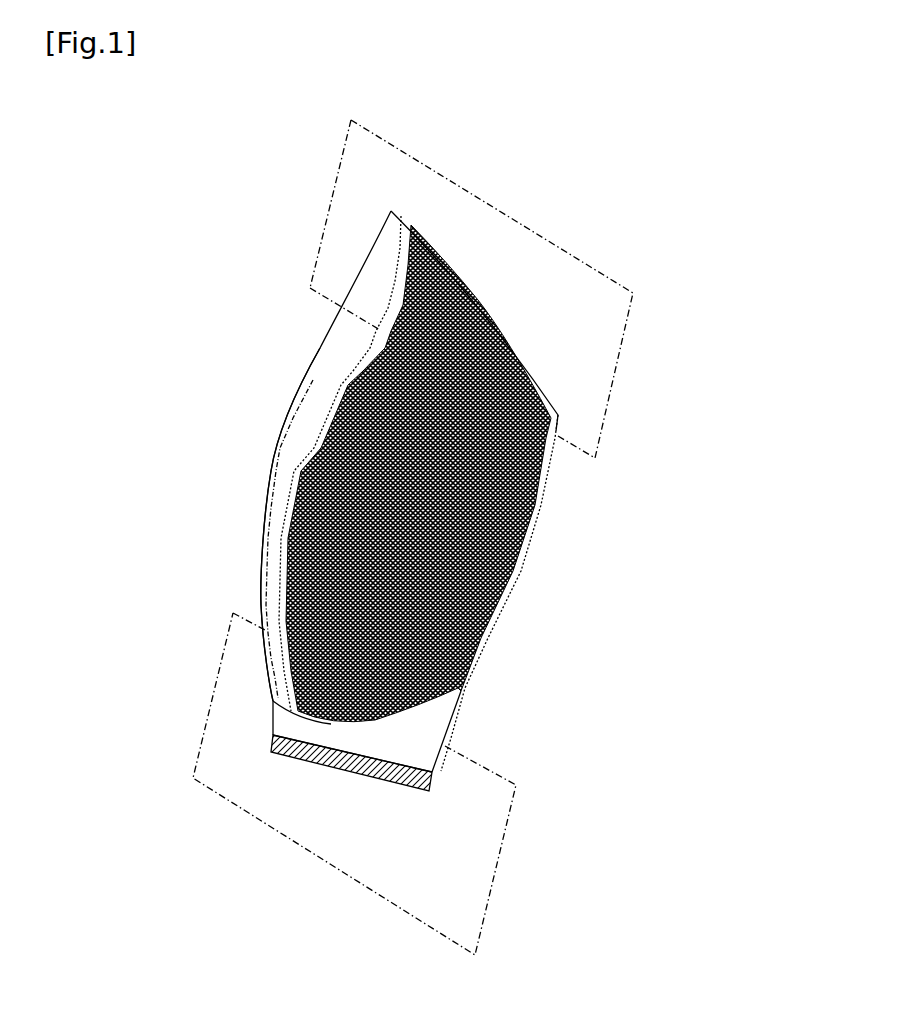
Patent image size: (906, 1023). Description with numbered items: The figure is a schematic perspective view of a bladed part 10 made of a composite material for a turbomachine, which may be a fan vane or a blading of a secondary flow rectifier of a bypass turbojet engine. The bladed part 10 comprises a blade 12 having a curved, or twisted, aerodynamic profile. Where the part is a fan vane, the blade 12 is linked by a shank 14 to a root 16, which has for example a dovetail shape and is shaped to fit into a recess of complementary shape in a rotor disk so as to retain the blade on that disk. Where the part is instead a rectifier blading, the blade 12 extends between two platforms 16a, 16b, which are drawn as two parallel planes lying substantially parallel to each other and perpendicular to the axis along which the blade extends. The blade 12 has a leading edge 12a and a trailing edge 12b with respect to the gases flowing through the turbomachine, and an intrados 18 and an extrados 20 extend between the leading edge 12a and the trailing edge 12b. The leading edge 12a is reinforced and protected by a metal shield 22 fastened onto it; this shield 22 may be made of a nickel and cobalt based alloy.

The bladed part 10 is at (574, 419).
The blade 12 is at (512, 352).
The leading edge 12a is at (262, 457).
The trailing edge 12b is at (492, 608).
The shank 14 is at (418, 710).
The root 16 is at (423, 772).
The platform 16a is at (487, 857).
The platform 16b is at (623, 312).
The intrados 18 is at (527, 493).
The extrados 20 is at (533, 372).
The metal shield 22 is at (255, 563).